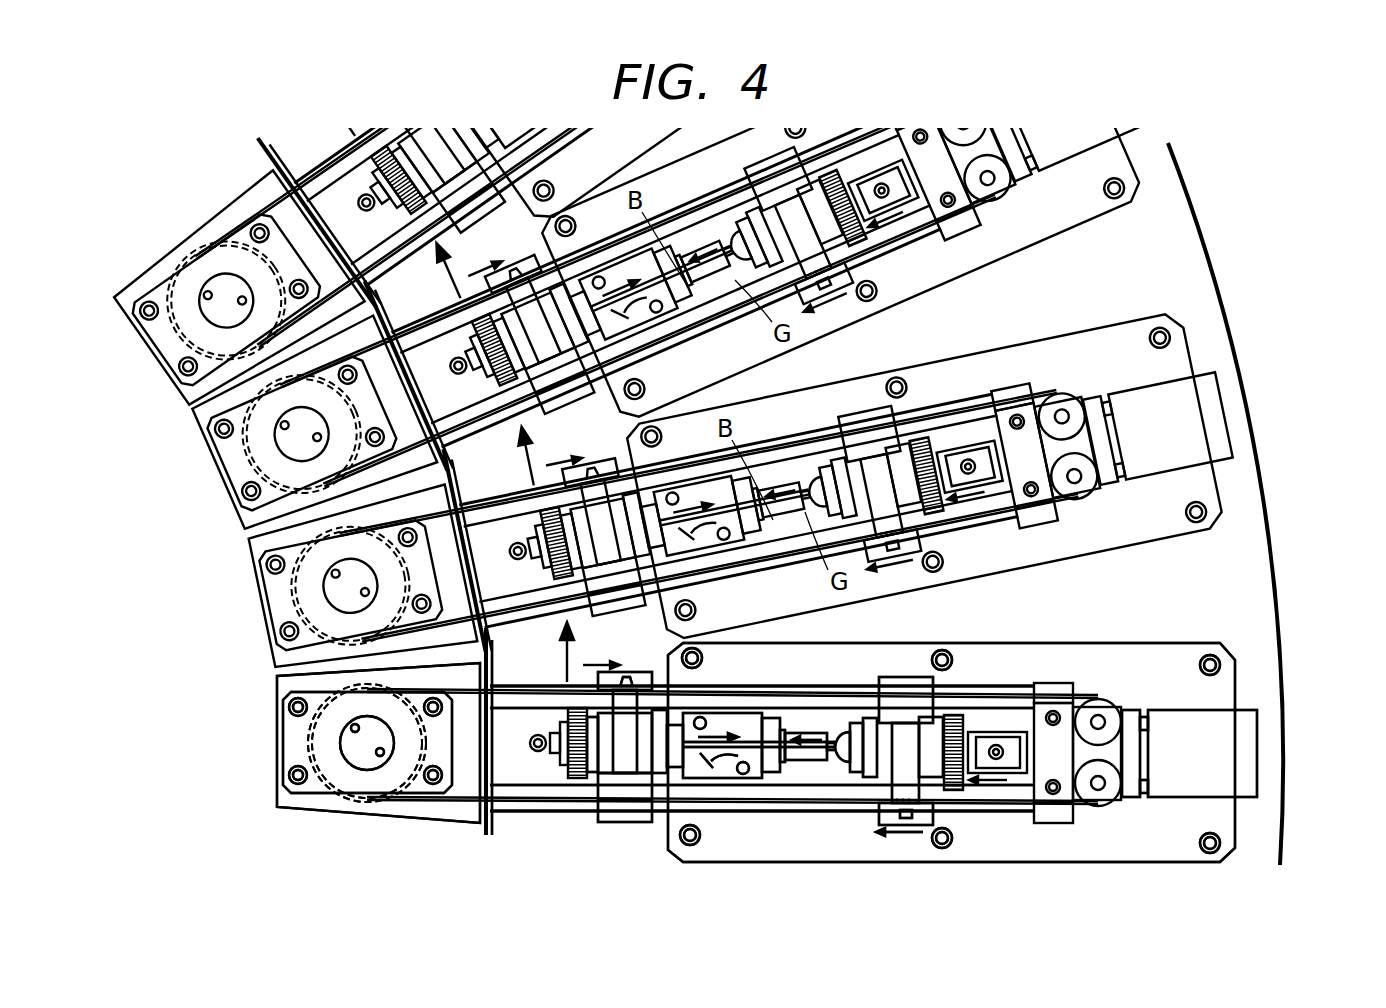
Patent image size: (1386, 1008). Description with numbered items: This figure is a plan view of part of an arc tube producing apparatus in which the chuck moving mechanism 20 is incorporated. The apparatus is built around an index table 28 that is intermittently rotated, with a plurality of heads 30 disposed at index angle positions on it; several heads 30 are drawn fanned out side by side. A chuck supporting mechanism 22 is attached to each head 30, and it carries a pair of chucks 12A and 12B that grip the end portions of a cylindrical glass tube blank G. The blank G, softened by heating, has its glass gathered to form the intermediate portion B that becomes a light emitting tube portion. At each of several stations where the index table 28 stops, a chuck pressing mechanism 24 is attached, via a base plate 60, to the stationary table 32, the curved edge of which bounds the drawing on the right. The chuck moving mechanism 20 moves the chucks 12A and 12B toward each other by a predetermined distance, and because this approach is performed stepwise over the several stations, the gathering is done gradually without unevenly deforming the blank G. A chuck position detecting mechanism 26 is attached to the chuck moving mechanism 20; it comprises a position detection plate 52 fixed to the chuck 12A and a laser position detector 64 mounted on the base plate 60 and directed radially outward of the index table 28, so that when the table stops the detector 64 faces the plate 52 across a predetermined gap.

The chuck moving mechanism 20 is at (1205, 597).
The chuck supporting mechanism 22 is at (580, 834).
The chuck pressing mechanism 24 is at (1018, 675).
The chuck position detecting mechanism 26 is at (803, 790).
The index table 28 is at (442, 480).
The head 30 is at (435, 810).
The stationary table 32 is at (1173, 285).
The chuck 12A is at (875, 842).
The chuck 12B is at (623, 835).
The position detection plate 52 is at (842, 745).
The base plate 60 is at (1122, 847).
The laser position detector 64 is at (802, 733).
The intermediate portion B is at (807, 735).
The cylindrical glass tube blank G is at (817, 760).